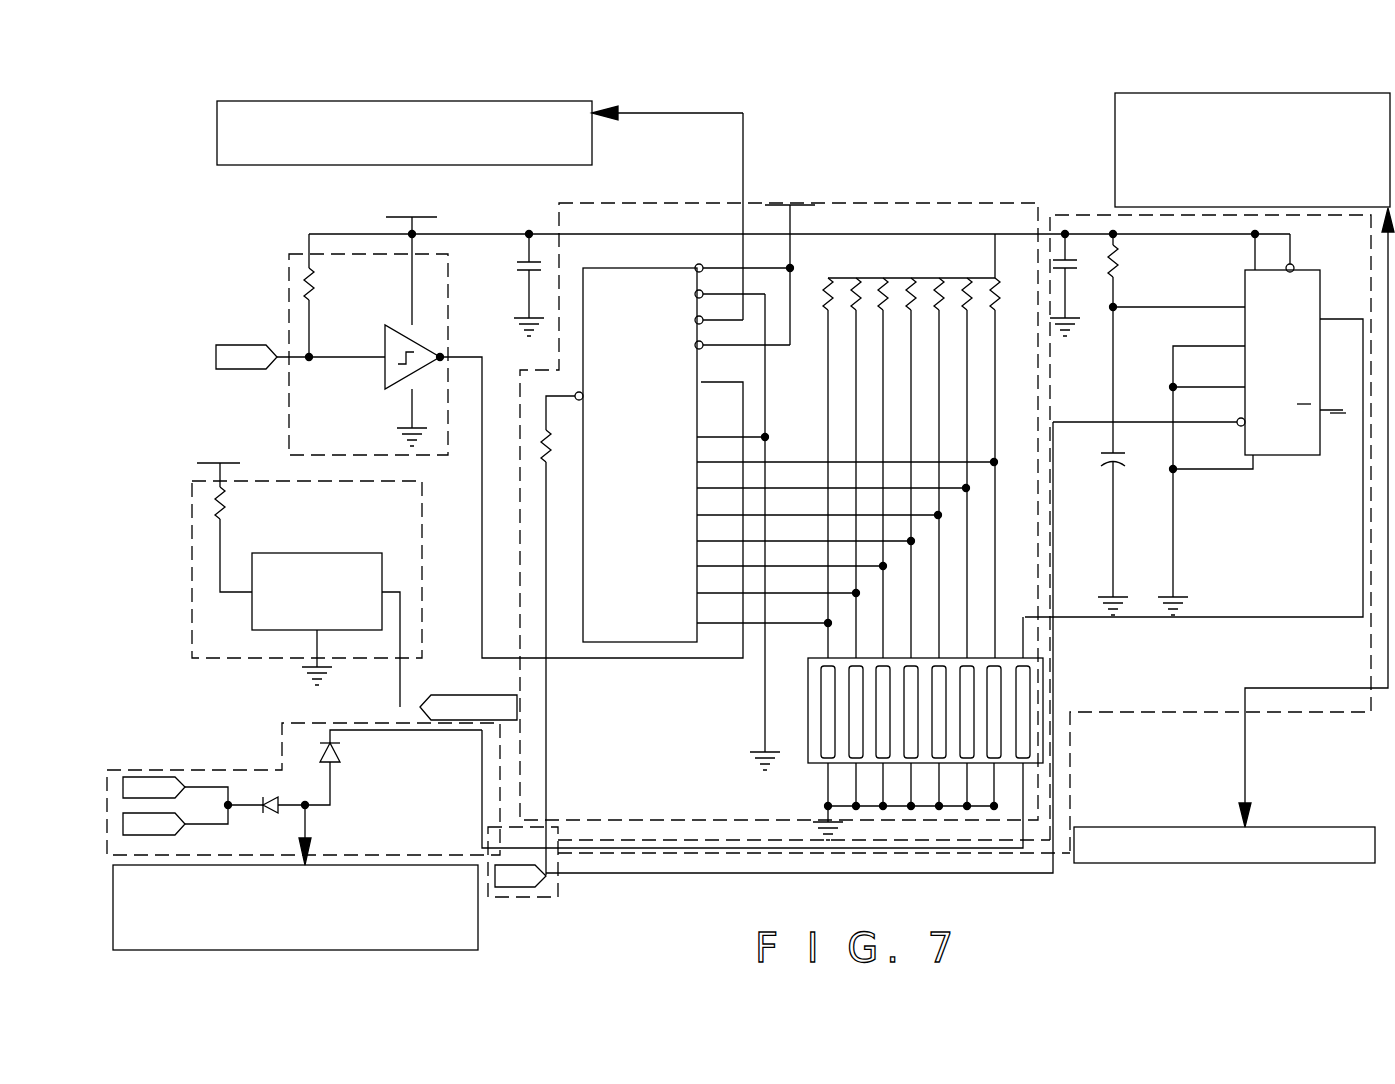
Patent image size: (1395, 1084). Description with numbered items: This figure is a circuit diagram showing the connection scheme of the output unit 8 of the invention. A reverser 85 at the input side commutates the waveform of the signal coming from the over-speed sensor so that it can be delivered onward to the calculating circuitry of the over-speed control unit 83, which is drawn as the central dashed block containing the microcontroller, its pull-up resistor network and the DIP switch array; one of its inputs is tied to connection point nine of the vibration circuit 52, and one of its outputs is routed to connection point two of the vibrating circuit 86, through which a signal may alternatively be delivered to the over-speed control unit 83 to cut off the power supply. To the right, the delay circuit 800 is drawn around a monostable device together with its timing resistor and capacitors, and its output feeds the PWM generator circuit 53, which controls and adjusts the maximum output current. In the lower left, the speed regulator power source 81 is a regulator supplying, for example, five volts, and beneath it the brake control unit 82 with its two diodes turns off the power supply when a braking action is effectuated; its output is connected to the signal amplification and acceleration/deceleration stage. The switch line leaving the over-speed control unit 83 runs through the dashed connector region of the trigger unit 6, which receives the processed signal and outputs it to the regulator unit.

The output unit 8 is at (750, 521).
The reverser 85 is at (290, 272).
The vibration circuit 52 is at (490, 150).
The over-speed control unit 83 is at (693, 217).
The vibrating circuit 86 is at (1128, 108).
The delay circuit 800 is at (1108, 215).
The speed regulator power source 81 is at (197, 525).
The brake control unit 82 is at (197, 778).
The trigger unit 6 is at (470, 910).
The PWM generator circuit 53 is at (1272, 860).